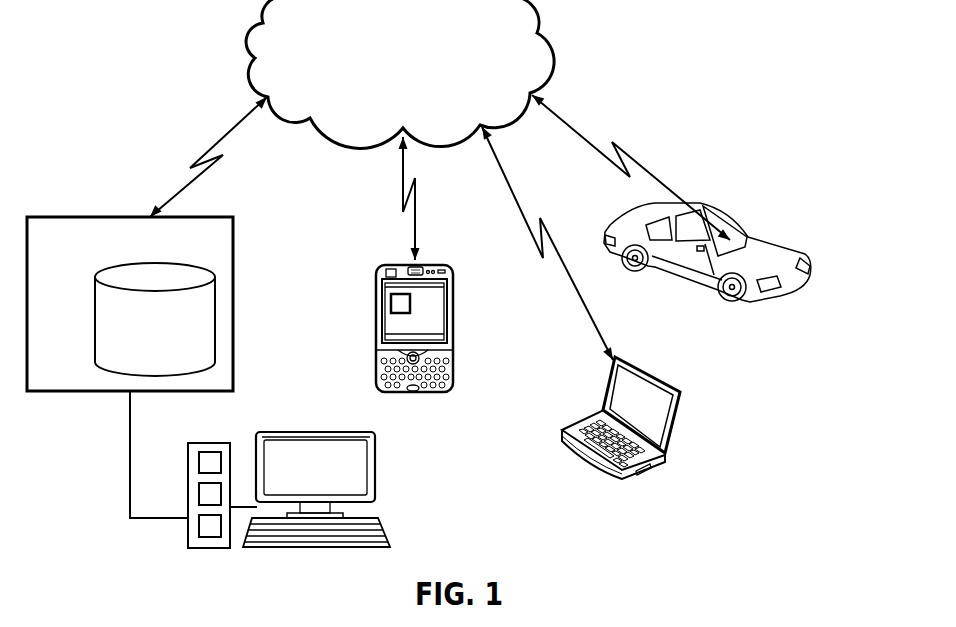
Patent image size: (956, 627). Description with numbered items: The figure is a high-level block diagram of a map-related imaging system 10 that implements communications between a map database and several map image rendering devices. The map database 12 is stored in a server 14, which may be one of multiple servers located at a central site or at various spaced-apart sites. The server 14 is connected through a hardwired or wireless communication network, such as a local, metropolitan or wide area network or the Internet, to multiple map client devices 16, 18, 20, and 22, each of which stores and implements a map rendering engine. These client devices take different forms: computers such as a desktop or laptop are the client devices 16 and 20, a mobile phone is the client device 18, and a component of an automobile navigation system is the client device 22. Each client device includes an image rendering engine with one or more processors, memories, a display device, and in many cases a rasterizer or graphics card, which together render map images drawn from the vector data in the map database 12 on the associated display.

The map-related imaging system 10 is at (185, 75).
The map database 12 is at (215, 312).
The server 14 is at (80, 217).
The map client device 16 is at (388, 461).
The map client device 18 is at (452, 258).
The map client device 20 is at (690, 435).
The map client device 22 is at (800, 303).